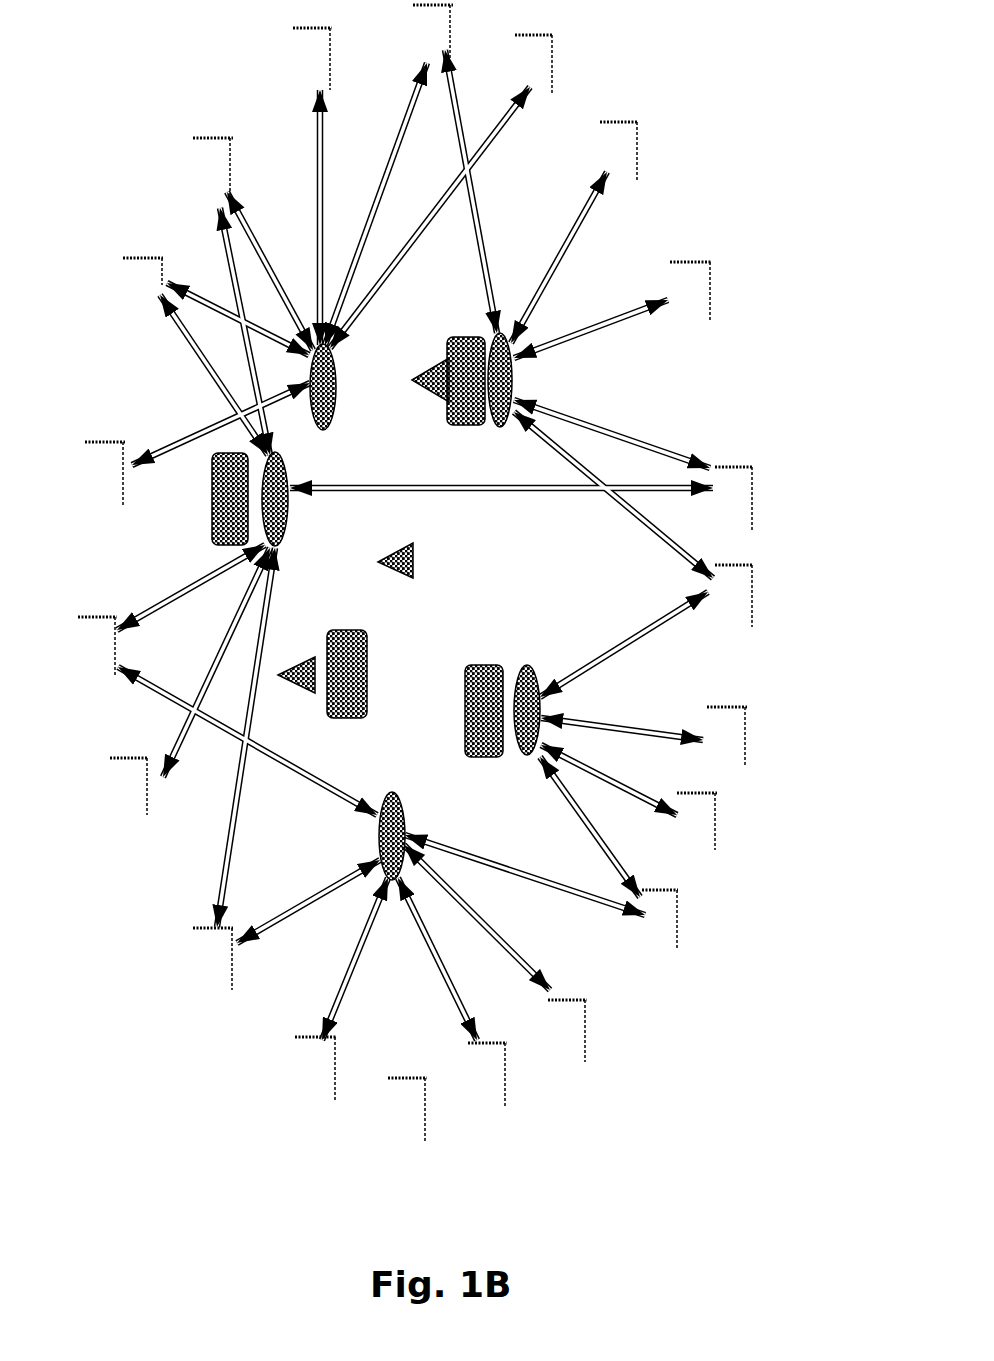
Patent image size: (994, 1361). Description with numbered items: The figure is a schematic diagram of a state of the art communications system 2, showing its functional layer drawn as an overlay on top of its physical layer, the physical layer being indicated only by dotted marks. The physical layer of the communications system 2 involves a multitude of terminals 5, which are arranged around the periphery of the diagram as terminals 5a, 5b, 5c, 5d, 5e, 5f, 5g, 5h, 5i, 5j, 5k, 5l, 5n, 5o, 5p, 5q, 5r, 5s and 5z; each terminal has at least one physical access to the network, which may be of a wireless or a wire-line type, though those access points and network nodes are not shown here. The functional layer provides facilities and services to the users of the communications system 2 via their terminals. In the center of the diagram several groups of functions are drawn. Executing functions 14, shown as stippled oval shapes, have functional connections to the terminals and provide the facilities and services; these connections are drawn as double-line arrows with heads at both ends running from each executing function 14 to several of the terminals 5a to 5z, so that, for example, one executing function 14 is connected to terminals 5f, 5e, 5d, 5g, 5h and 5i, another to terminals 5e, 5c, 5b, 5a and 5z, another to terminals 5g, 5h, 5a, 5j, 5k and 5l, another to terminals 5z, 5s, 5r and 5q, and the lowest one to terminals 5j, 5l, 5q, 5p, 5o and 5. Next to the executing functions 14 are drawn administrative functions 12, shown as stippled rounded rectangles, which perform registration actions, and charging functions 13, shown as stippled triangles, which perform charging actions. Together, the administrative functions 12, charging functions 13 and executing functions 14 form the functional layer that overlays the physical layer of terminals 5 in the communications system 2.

The communications system 2 is at (396, 545).
The terminal 5 is at (297, 1068).
The terminal 5a is at (756, 498).
The terminal 5b is at (711, 290).
The terminal 5c is at (640, 148).
The terminal 5d is at (558, 65).
The terminal 5e is at (455, 31).
The terminal 5f is at (335, 58).
The terminal 5g is at (191, 166).
The terminal 5h is at (120, 276).
The terminal 5i is at (83, 473).
The terminal 5j is at (75, 646).
The terminal 5k is at (106, 786).
The terminal 5l is at (191, 959).
The terminal 5n is at (386, 1110).
The terminal 5o is at (514, 1075).
The terminal 5p is at (594, 1031).
The terminal 5q is at (687, 920).
The terminal 5r is at (723, 821).
The terminal 5s is at (752, 736).
The terminal 5z is at (760, 596).
The administrative function 12 is at (458, 337).
The charging function 13 is at (430, 393).
The executing function 14 is at (337, 378).